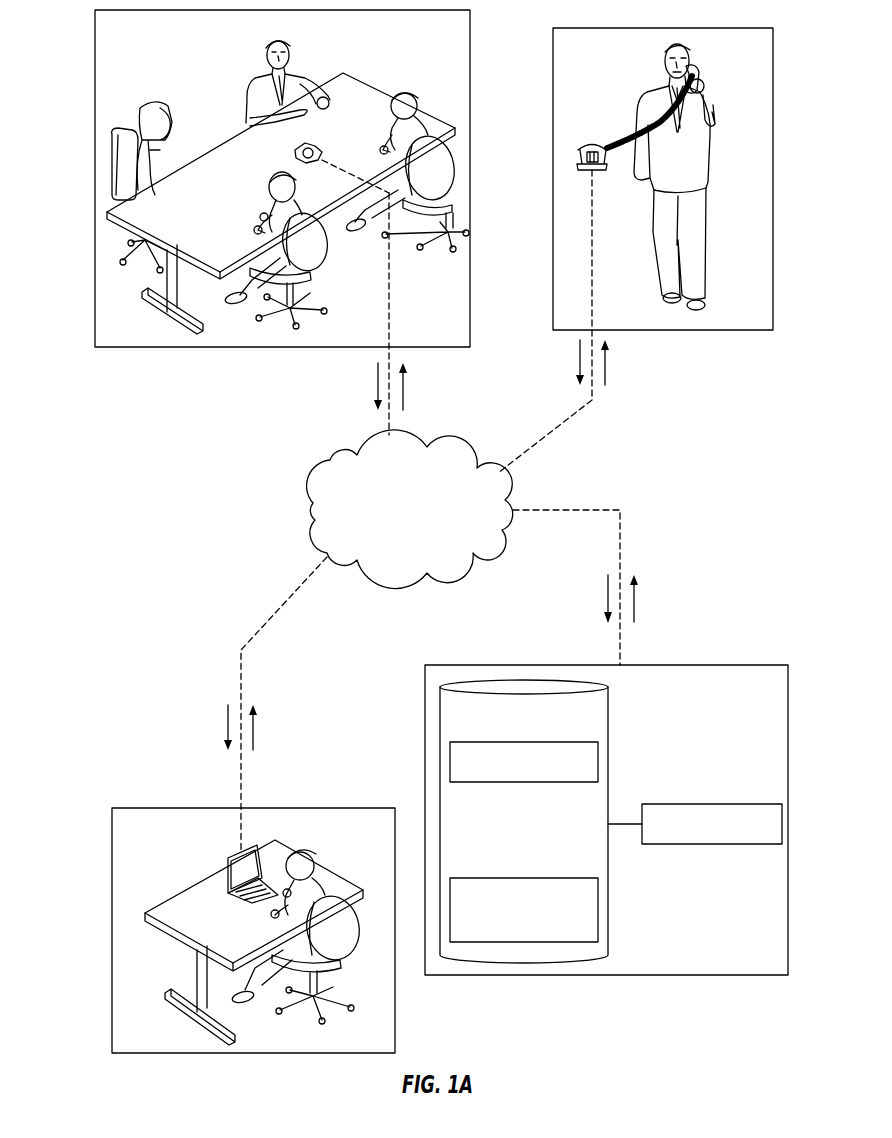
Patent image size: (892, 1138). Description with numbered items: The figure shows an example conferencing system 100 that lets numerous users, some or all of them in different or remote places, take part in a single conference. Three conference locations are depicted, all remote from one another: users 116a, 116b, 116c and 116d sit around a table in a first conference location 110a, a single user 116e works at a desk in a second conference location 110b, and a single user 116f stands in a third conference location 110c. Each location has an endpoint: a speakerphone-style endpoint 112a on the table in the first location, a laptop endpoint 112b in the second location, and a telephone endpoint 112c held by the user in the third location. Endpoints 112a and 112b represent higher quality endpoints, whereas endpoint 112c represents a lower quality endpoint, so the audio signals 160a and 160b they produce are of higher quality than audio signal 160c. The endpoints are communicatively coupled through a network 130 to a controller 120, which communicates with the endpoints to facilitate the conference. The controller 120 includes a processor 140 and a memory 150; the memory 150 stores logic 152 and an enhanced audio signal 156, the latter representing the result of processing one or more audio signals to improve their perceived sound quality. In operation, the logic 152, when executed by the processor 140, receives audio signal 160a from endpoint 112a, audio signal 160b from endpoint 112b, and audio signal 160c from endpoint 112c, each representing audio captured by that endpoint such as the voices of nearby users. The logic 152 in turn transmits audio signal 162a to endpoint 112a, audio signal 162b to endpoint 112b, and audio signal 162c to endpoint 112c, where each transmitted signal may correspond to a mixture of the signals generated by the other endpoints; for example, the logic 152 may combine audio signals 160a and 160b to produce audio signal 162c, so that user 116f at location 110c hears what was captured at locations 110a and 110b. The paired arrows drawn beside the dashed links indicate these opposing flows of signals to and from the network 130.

The conferencing system 100 is at (160, 452).
The first conference location 110a is at (147, 40).
The second conference location 110b is at (162, 837).
The third conference location 110c is at (602, 57).
The endpoint 112a is at (320, 163).
The endpoint 112b is at (228, 868).
The endpoint 112c is at (591, 138).
The user 116a is at (257, 66).
The user 116b is at (152, 102).
The user 116c is at (404, 93).
The user 116d is at (277, 171).
The user 116e is at (313, 850).
The user 116f is at (706, 250).
The controller 120 is at (728, 724).
The network 130 is at (423, 531).
The processor 140 is at (712, 844).
The memory 150 is at (598, 925).
The logic 152 is at (598, 762).
The enhanced audio signal 156 is at (598, 897).
The audio signal 160a is at (375, 390).
The audio signal 160b is at (255, 730).
The audio signal 160c is at (577, 364).
The audio signal 162a is at (405, 386).
The audio signal 162b is at (225, 735).
The audio signal 162c is at (607, 360).